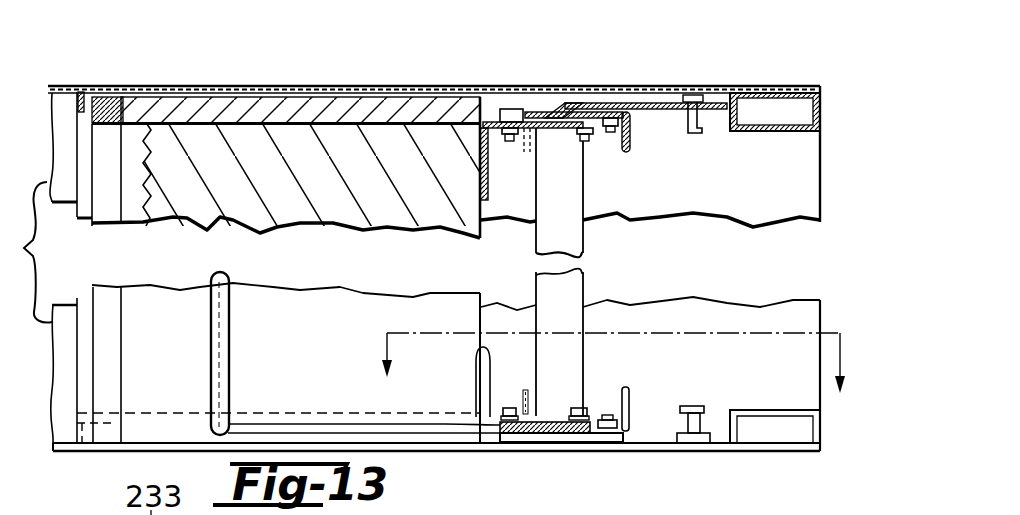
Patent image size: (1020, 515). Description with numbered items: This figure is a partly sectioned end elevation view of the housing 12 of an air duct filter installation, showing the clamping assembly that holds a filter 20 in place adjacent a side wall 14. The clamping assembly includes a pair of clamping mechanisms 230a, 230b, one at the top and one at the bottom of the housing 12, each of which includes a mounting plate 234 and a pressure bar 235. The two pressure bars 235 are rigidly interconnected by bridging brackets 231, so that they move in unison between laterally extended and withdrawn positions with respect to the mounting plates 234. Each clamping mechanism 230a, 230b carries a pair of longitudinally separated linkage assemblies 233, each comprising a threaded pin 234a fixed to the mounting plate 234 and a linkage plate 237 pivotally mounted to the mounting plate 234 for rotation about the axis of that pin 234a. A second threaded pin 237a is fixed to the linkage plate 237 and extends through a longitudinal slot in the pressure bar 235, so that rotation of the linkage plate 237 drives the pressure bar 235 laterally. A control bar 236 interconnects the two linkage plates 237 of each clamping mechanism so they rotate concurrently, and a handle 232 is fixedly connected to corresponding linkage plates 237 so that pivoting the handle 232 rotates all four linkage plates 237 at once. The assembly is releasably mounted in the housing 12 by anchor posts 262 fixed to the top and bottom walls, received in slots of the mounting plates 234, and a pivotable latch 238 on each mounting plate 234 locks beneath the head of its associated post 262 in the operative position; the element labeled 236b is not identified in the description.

The housing 12 is at (99, 70).
The filter 20 is at (178, 232).
The side wall 14 is at (615, 381).
The clamping mechanism 230a is at (503, 74).
The clamping mechanism 230b is at (503, 466).
The bridging bracket 231 is at (573, 240).
The handle 232 is at (213, 353).
The linkage assembly 233 is at (567, 90).
The mounting plate 234 is at (650, 92).
The threaded pin 234a is at (585, 141).
The pressure bar 235 is at (487, 130).
The control bar 236 is at (628, 135).
The bracket leg 236b is at (630, 146).
The linkage plate 237 is at (585, 102).
The second threaded pin 237a is at (509, 140).
The pivotable latch 238 is at (692, 437).
The anchor post 262 is at (702, 124).